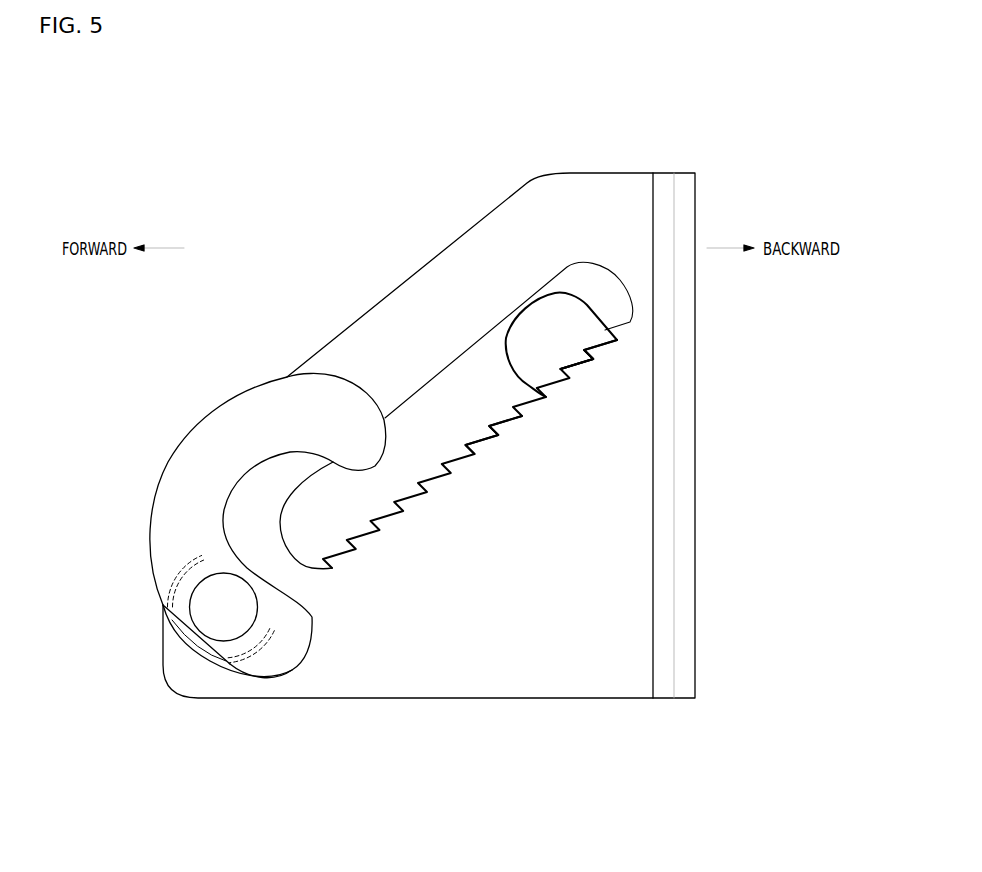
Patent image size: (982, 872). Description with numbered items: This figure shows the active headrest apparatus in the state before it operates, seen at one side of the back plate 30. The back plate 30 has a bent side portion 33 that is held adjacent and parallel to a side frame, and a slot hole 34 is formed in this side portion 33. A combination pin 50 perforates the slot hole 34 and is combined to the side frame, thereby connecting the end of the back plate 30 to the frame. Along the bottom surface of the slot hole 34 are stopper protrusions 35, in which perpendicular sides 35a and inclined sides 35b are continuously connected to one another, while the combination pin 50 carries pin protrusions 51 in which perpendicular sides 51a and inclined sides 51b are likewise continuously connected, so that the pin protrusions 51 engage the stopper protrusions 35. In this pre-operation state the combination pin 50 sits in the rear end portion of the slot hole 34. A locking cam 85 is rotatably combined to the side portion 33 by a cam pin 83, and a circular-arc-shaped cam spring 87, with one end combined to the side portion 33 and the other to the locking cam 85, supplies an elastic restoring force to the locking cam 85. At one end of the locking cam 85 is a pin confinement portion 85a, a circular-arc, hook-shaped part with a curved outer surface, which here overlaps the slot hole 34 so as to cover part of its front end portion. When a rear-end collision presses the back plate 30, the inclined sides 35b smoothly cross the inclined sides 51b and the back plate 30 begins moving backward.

The back plate 30 is at (591, 173).
The side portion 33 is at (640, 570).
The slot hole 34 is at (410, 400).
The stopper protrusion 35 is at (590, 757).
The perpendicular side 35a is at (497, 440).
The inclined side 35b is at (493, 447).
The combination pin 50 is at (542, 313).
The pin protrusion 51 is at (768, 382).
The perpendicular side 51a is at (604, 352).
The inclined side 51b is at (596, 348).
The cam pin 83 is at (213, 612).
The locking cam 85 is at (162, 548).
The pin confinement portion 85a is at (363, 457).
The cam spring 87 is at (203, 662).